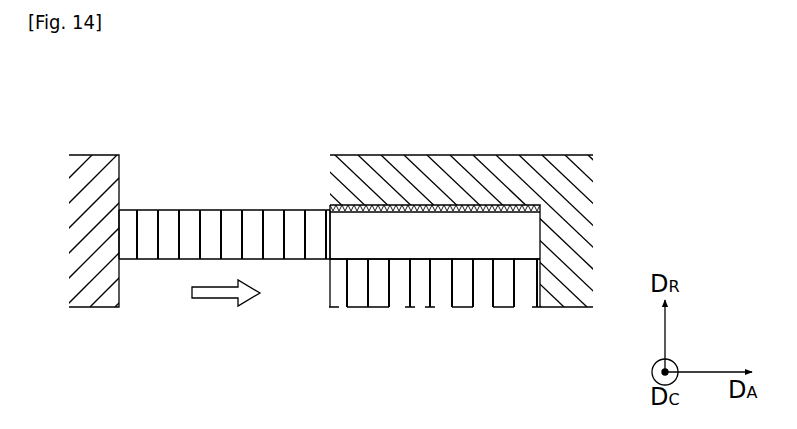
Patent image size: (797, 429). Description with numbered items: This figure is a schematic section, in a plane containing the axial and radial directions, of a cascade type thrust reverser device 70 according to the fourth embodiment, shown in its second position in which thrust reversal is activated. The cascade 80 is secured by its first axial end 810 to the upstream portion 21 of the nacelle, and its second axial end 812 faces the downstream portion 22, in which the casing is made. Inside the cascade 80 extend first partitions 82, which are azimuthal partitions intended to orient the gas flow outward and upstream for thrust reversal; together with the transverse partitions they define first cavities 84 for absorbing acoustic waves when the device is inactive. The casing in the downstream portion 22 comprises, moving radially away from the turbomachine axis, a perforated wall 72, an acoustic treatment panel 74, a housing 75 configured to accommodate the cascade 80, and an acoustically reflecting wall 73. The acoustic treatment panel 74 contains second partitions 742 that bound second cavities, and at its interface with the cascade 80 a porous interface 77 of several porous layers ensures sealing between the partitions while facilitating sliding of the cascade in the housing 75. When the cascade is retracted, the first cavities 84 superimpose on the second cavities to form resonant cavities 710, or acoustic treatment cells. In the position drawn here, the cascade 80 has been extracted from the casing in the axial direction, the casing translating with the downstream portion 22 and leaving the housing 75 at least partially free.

The upstream portion 21 is at (84, 194).
The downstream portion 22 is at (577, 168).
The thrust reverser device 70 is at (449, 190).
The perforated wall 72 is at (479, 321).
The acoustically reflecting wall 73 is at (408, 207).
The acoustic treatment panel 74 is at (542, 285).
The housing 75 is at (479, 208).
The porous interface 77 is at (460, 258).
The cascade 80 is at (224, 221).
The first partitions 82 is at (265, 230).
The first cavities 84 is at (170, 232).
The resonant cavities 710 is at (380, 275).
The second partitions 742 is at (497, 287).
The first axial end 810 is at (127, 205).
The second axial end 812 is at (323, 206).